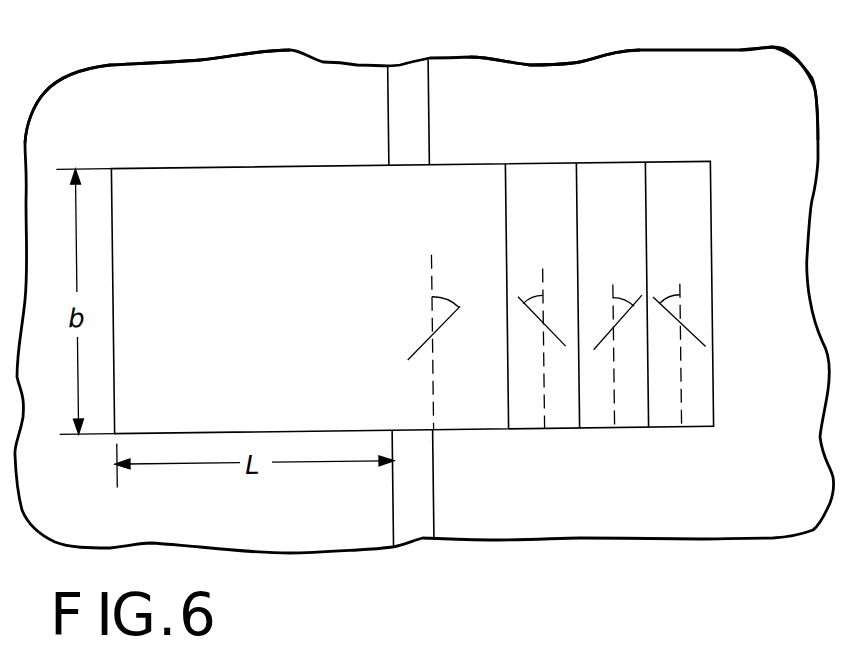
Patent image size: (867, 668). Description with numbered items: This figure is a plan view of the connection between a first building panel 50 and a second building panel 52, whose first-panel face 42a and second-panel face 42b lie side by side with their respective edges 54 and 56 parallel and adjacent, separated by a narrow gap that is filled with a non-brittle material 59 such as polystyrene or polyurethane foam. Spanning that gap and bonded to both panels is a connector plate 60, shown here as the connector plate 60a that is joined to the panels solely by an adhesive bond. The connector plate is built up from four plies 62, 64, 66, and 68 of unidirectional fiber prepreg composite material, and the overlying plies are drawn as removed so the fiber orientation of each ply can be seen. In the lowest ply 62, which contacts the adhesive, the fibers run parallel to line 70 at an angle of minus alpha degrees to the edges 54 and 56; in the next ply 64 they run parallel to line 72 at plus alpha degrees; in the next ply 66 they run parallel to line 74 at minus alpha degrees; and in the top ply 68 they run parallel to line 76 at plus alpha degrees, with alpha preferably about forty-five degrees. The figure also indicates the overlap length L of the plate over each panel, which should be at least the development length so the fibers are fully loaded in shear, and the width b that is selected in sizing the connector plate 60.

The first-panel face 42a is at (135, 80).
The second-panel face 42b is at (730, 66).
The first building panel 50 is at (199, 66).
The second building panel 52 is at (573, 75).
The edge of first building panel 54 is at (398, 111).
The edge of second building panel 56 is at (418, 112).
The non-brittle material 59 is at (406, 76).
The connector plate 60 is at (161, 167).
The connector plate 60a is at (632, 162).
The lowest ply 62 is at (690, 419).
The ply 64 is at (625, 419).
The ply 66 is at (548, 418).
The ply 68 is at (460, 413).
The line 70 is at (673, 316).
The line 72 is at (596, 346).
The line 74 is at (549, 332).
The line 76 is at (421, 346).